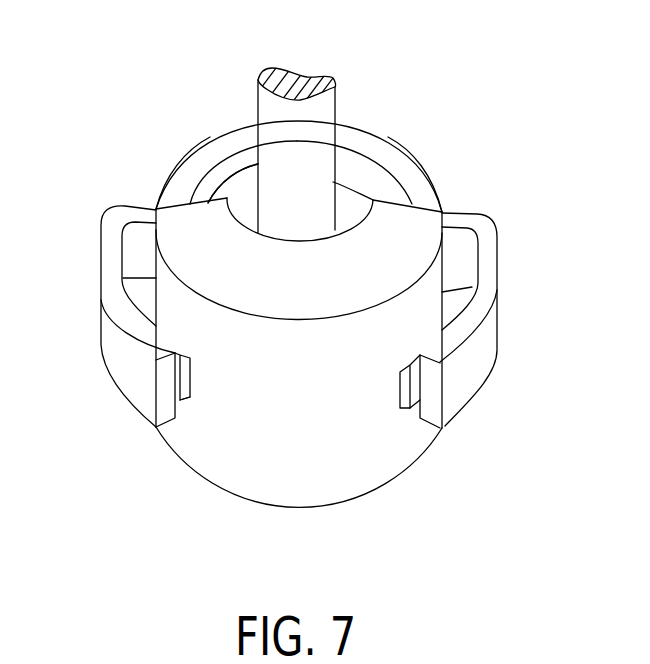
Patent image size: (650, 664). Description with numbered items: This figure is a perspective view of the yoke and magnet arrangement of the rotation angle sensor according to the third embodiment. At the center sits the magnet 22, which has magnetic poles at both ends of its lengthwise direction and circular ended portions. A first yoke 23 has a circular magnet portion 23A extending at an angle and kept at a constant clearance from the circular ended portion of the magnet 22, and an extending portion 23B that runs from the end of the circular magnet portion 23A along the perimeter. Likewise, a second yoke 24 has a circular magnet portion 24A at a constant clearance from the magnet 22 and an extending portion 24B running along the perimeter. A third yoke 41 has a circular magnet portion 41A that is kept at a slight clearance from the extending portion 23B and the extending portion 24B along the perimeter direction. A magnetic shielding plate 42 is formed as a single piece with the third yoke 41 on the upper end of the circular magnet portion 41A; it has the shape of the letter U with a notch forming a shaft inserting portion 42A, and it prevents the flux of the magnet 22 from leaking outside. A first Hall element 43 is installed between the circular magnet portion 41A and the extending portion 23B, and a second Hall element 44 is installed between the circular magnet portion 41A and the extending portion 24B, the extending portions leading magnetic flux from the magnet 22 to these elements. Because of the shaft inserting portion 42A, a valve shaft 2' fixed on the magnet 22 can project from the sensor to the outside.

The valve shaft 2' is at (310, 120).
The magnet 22 is at (257, 190).
The first yoke 23 is at (418, 182).
The circular magnet portion 23A is at (362, 140).
The extending portion 23B is at (478, 360).
The second yoke 24 is at (168, 197).
The circular magnet portion 24A is at (203, 157).
The extending portion 24B is at (137, 388).
The third yoke 41 is at (263, 477).
The circular magnet portion 41A is at (332, 487).
The magnetic shielding plate 42 is at (424, 233).
The shaft inserting portion 42A is at (232, 173).
The first Hall element 43 is at (402, 408).
The second Hall element 44 is at (185, 395).